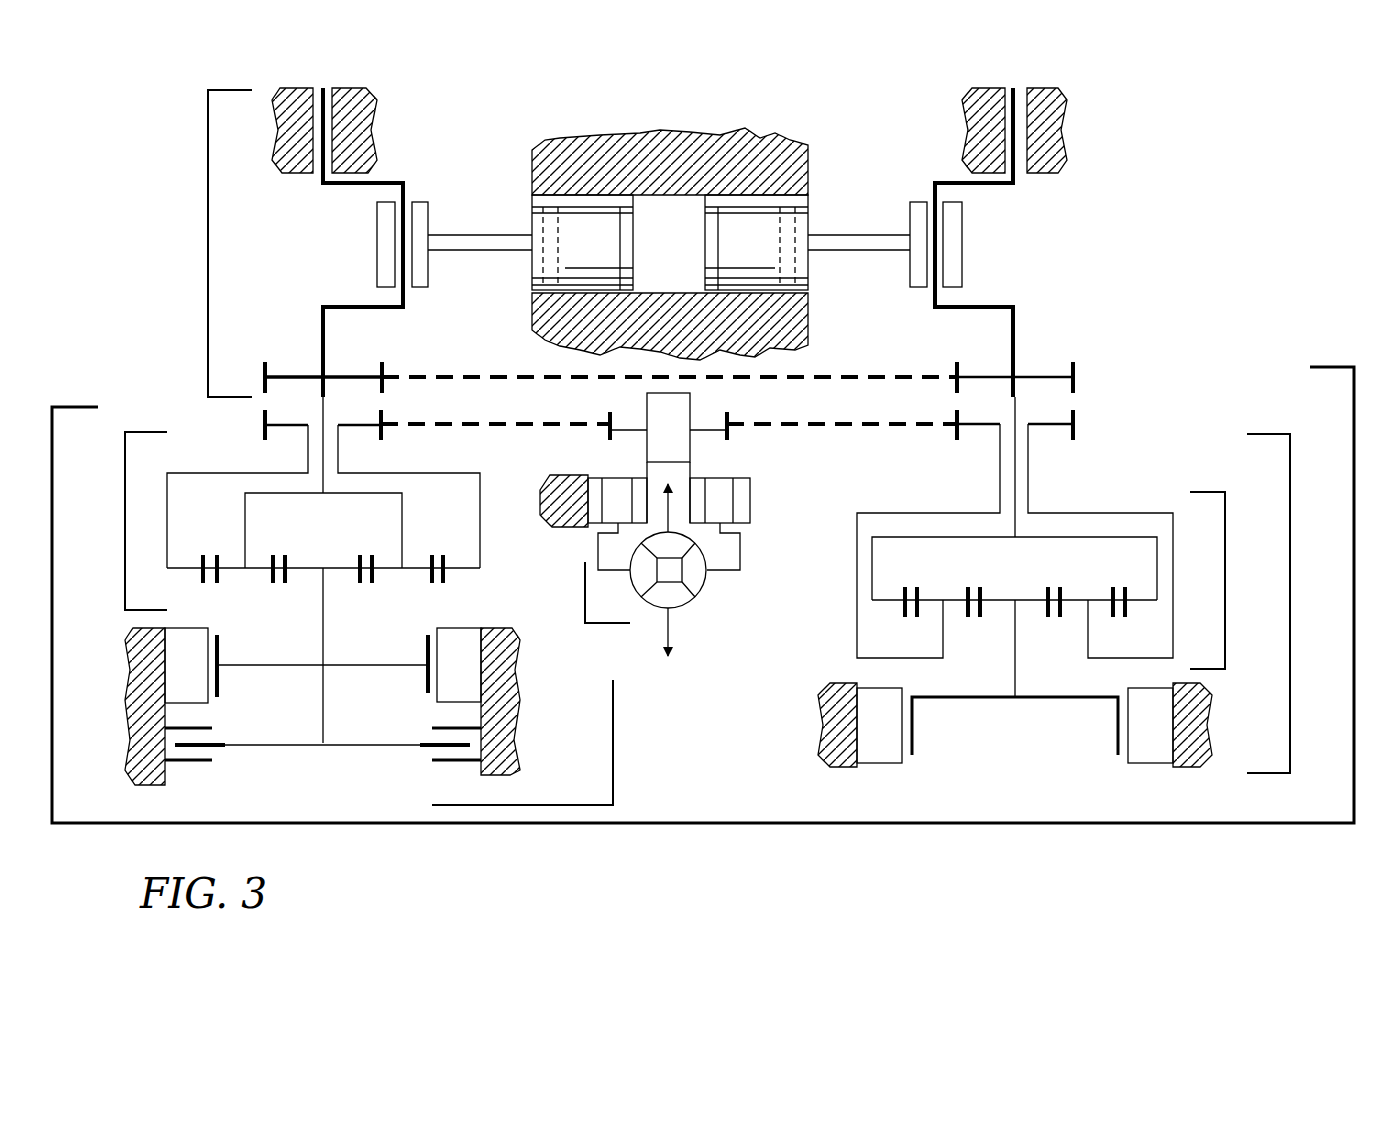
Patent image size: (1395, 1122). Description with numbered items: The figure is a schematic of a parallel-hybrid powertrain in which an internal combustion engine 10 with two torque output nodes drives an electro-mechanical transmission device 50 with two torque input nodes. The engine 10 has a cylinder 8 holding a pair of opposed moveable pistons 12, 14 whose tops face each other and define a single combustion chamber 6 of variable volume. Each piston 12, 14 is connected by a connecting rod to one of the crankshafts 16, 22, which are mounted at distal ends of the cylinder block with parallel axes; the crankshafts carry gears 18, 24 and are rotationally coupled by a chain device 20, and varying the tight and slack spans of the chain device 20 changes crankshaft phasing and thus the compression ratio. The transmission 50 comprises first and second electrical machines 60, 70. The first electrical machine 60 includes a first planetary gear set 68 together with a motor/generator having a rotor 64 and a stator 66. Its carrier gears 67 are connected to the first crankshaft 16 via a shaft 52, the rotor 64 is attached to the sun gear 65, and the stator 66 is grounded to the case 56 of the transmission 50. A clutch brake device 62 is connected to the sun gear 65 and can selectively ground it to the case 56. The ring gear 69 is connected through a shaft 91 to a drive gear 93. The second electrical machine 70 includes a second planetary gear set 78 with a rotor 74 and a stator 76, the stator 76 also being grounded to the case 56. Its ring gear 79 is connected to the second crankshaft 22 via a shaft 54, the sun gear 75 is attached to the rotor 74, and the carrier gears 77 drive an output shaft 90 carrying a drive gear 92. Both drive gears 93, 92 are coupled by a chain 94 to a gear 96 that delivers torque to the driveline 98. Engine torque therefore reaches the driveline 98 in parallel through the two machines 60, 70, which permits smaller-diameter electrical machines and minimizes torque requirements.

The combustion chamber 6 is at (678, 225).
The cylinder 8 is at (667, 185).
The internal combustion engine 10 is at (208, 318).
The moveable piston 12 is at (590, 213).
The moveable piston 14 is at (748, 215).
The first crankshaft 16 is at (325, 130).
The gear 18 is at (298, 372).
The chain device 20 is at (500, 377).
The second crankshaft 22 is at (1020, 133).
The gear 24 is at (1048, 372).
The electro-mechanical transmission device 50 is at (1355, 760).
The shaft 52 is at (320, 393).
The shaft 54 is at (1015, 398).
The case 56 is at (500, 770).
The first electrical machine 60 is at (613, 750).
The clutch brake device 62 is at (205, 752).
The rotor 64 is at (428, 653).
The sun gear 65 is at (332, 568).
The stator 66 is at (460, 673).
The carrier gears 67 is at (388, 568).
The first planetary gear set 68 is at (123, 532).
The ring gear 69 is at (462, 568).
The second electrical machine 70 is at (1292, 677).
The rotor 74 is at (915, 735).
The sun gear 75 is at (1027, 598).
The stator 76 is at (878, 762).
The carrier gears 77 is at (1100, 598).
The second planetary gear set 78 is at (1228, 583).
The ring gear 79 is at (1145, 598).
The output shaft 90 is at (1028, 487).
The shaft 91 is at (308, 447).
The drive gear 92 is at (985, 432).
The drive gear 93 is at (265, 425).
The chain 94 is at (555, 430).
The gear 96 is at (630, 430).
The driveline 98 is at (608, 623).